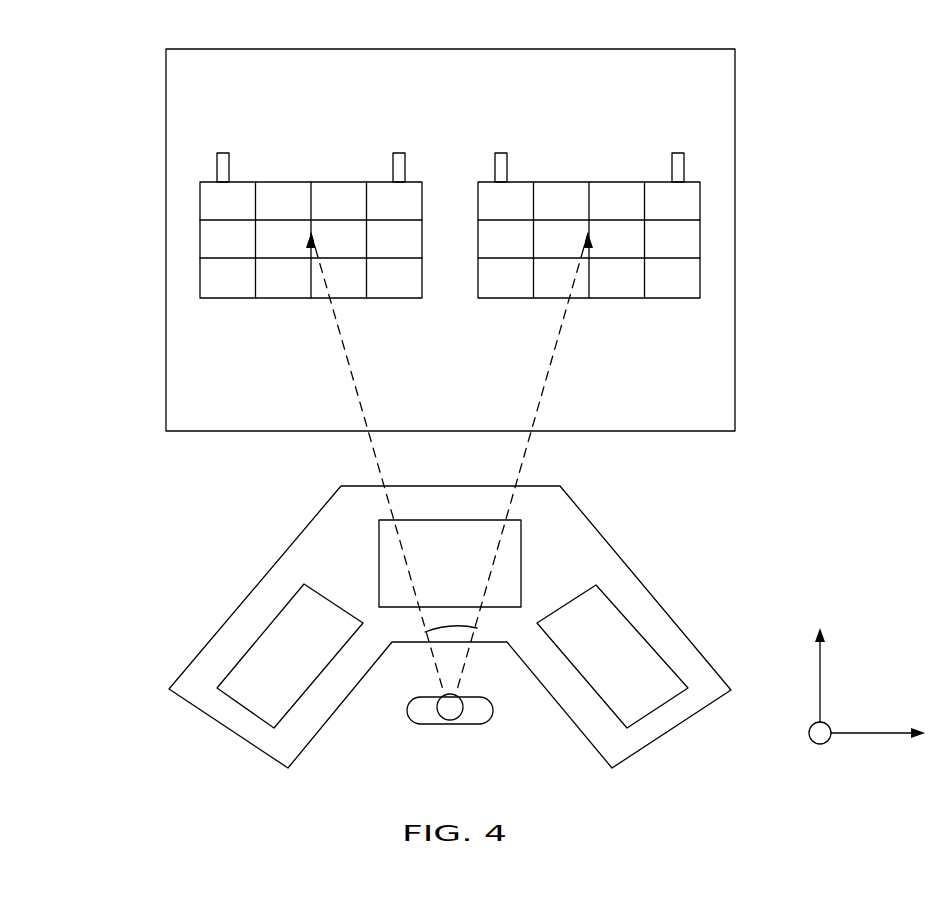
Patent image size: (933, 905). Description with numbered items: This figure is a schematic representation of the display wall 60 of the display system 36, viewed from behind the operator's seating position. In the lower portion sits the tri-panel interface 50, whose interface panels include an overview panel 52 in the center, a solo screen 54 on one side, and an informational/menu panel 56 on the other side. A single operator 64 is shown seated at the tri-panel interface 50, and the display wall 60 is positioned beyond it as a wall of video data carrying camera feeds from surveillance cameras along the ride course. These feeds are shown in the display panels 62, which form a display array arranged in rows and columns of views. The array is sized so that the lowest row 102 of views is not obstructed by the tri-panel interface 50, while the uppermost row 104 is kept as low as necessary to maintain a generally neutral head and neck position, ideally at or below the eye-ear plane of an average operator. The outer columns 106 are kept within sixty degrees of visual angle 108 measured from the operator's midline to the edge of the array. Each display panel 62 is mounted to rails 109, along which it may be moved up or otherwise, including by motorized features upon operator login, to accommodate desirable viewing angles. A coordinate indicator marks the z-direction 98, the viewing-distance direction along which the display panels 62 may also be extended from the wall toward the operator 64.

The display system 36 is at (124, 60).
The tri-panel interface 50 is at (645, 587).
The overview panel 52 is at (463, 574).
The solo screen 54 is at (621, 659).
The informational/menu panel 56 is at (306, 663).
The display wall 60 is at (465, 137).
The display panels 62 is at (284, 182).
The operator 64 is at (452, 723).
The z-direction 98 is at (818, 683).
The lowest row 102 is at (187, 271).
The uppermost row 104 is at (187, 198).
The outer columns 106 is at (445, 187).
The visual angle 108 is at (448, 626).
The rails 109 is at (229, 162).